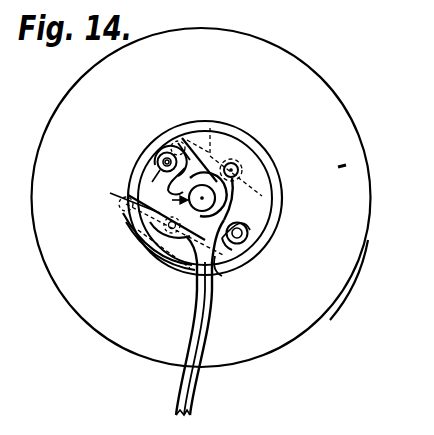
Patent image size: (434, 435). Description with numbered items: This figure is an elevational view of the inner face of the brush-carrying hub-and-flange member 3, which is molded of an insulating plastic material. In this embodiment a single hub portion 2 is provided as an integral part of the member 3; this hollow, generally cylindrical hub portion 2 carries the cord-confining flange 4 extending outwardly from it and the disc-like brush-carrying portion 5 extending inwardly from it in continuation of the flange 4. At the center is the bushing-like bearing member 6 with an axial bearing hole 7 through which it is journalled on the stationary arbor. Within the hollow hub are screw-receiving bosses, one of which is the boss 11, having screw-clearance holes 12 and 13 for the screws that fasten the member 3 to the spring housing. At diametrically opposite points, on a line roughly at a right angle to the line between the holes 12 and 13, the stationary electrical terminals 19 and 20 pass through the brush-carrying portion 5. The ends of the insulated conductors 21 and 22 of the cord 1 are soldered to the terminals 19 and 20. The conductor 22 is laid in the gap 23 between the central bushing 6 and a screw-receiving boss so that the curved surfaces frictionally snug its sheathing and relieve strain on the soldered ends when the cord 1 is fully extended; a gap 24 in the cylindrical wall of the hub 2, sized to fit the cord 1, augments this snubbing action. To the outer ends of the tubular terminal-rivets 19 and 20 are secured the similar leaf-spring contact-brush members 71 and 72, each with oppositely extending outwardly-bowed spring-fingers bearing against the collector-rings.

The cord 1 is at (200, 321).
The hub portion 2 is at (262, 165).
The brush-carrying hub-and-flange member 3 is at (298, 50).
The cord-confining flange 4 is at (352, 268).
The brush-carrying portion 5 is at (223, 143).
The central bushing-like bearing member 6 is at (141, 213).
The axial bearing hole 7 is at (136, 191).
The screw-receiving boss 11 is at (160, 162).
The screw-clearance hole 12 is at (243, 241).
The screw-clearance hole 13 is at (167, 158).
The stationary electrical terminal 19 is at (142, 239).
The stationary electrical terminal 20 is at (235, 166).
The insulated conductor 21 is at (180, 264).
The insulated conductor 22 is at (248, 199).
The gap 23 is at (246, 205).
The gap 24 is at (222, 270).
The leaf-spring contact-brush member 71 is at (152, 247).
The leaf-spring contact-brush member 72 is at (216, 137).